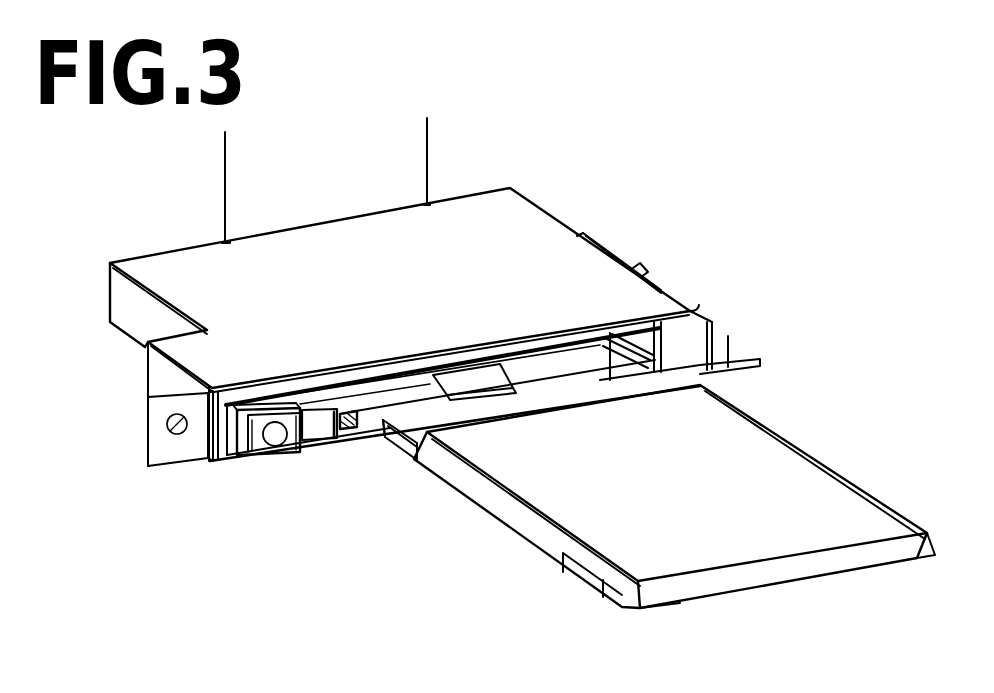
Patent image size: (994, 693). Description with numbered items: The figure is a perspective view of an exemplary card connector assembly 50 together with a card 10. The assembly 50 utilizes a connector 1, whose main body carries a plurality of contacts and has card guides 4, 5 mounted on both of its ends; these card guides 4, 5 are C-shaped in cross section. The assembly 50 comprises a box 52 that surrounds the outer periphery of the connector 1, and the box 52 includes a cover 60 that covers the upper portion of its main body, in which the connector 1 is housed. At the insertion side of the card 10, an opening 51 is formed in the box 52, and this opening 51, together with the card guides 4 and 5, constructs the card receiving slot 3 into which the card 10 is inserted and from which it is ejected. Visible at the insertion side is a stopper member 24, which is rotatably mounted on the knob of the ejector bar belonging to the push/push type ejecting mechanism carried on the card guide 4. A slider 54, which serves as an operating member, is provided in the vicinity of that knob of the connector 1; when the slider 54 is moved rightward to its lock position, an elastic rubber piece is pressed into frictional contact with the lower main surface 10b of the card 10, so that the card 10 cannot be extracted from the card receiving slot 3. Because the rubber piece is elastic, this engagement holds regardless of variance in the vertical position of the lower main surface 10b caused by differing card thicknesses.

The connector 1 is at (686, 345).
The card receiving slot 3 is at (410, 397).
The card guide 4 is at (367, 400).
The card guide 5 is at (627, 332).
The card 10 is at (797, 430).
The lower main surface 10b is at (735, 550).
The stopper member 24 is at (318, 432).
The assembly 50 is at (571, 103).
The opening 51 is at (372, 427).
The box 52 is at (173, 246).
The slider 54 is at (240, 432).
The cover 60 is at (487, 237).